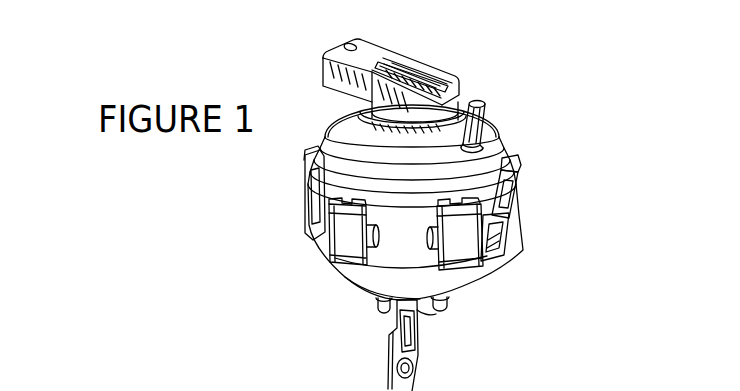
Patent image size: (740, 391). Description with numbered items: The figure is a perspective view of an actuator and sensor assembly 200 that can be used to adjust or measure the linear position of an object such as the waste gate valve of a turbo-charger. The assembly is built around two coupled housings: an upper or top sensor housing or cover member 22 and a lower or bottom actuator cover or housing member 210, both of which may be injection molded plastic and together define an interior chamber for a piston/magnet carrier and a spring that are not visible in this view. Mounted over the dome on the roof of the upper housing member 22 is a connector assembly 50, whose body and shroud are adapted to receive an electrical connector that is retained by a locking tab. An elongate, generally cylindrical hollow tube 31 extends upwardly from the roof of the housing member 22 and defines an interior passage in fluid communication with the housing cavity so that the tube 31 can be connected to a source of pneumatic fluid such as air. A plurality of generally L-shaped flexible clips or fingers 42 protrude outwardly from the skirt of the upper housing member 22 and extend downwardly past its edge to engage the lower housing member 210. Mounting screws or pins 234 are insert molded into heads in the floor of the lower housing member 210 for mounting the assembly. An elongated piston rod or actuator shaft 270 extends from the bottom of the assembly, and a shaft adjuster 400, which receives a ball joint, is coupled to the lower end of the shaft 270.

The connector assembly 50 is at (395, 46).
The actuator and sensor assembly 200 is at (494, 63).
The upper sensor housing 22 is at (490, 111).
The tube 31 is at (473, 132).
The clips 42 is at (519, 190).
The lower actuator housing member 210 is at (339, 273).
The mounting pins 234 is at (447, 301).
The piston rod 270 is at (420, 312).
The shaft adjuster 400 is at (420, 345).